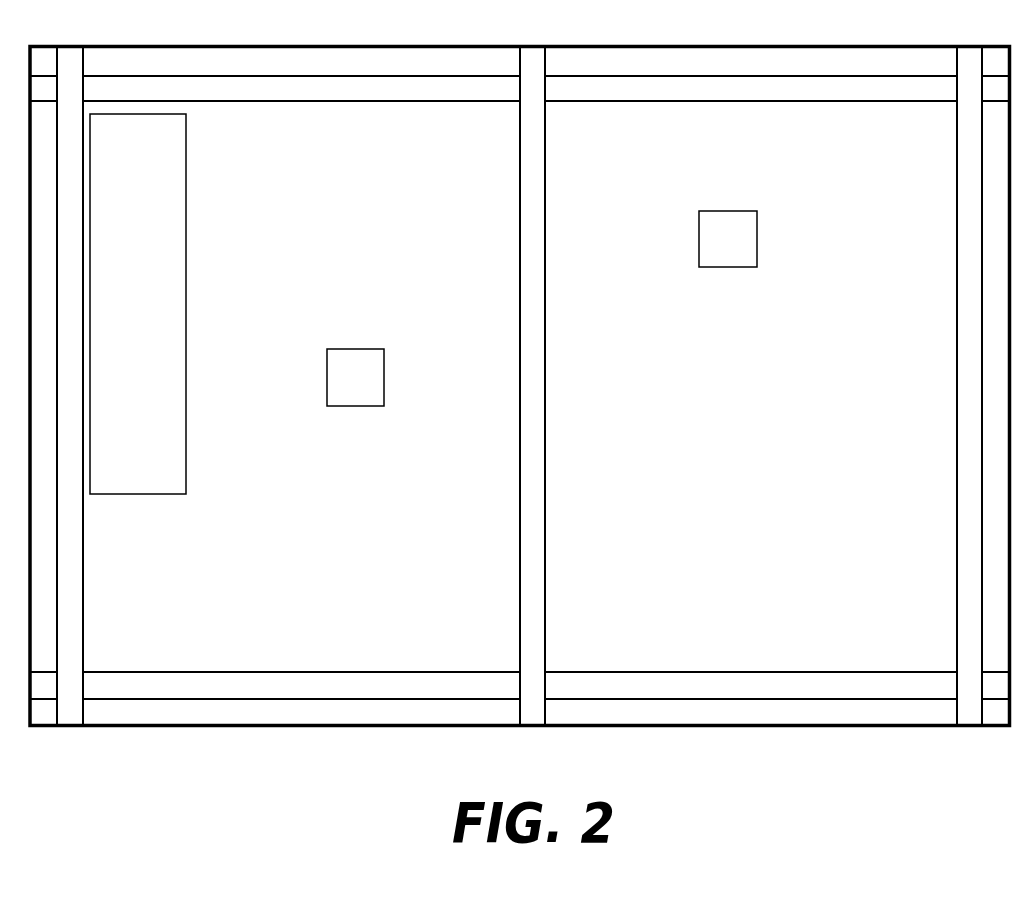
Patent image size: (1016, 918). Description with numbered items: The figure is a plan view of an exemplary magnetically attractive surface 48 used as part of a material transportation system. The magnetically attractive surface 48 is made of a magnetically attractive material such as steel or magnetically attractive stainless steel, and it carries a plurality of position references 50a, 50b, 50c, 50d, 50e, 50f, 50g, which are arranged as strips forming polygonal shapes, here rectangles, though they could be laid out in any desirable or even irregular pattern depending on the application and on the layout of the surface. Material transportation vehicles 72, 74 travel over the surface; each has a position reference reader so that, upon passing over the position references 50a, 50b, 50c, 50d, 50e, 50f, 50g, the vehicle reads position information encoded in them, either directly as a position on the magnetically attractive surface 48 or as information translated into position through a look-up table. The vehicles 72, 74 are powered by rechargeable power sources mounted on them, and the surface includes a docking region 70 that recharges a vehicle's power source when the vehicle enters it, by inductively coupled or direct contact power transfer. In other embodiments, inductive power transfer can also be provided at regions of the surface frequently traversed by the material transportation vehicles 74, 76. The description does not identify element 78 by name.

The magnetically attractive surface 48 is at (177, 41).
The position reference 50a is at (333, 102).
The position reference 50b is at (787, 105).
The position reference 50c is at (85, 625).
The position reference 50d is at (307, 672).
The position reference 50e is at (518, 603).
The position reference 50f is at (770, 672).
The position reference 50g is at (957, 605).
The docking region 70 is at (187, 253).
The material transportation vehicle 72 is at (327, 360).
The material transportation vehicle 74 is at (700, 227).
The material transportation vehicle 76 is at (442, 483).
The right display area 78 is at (658, 482).